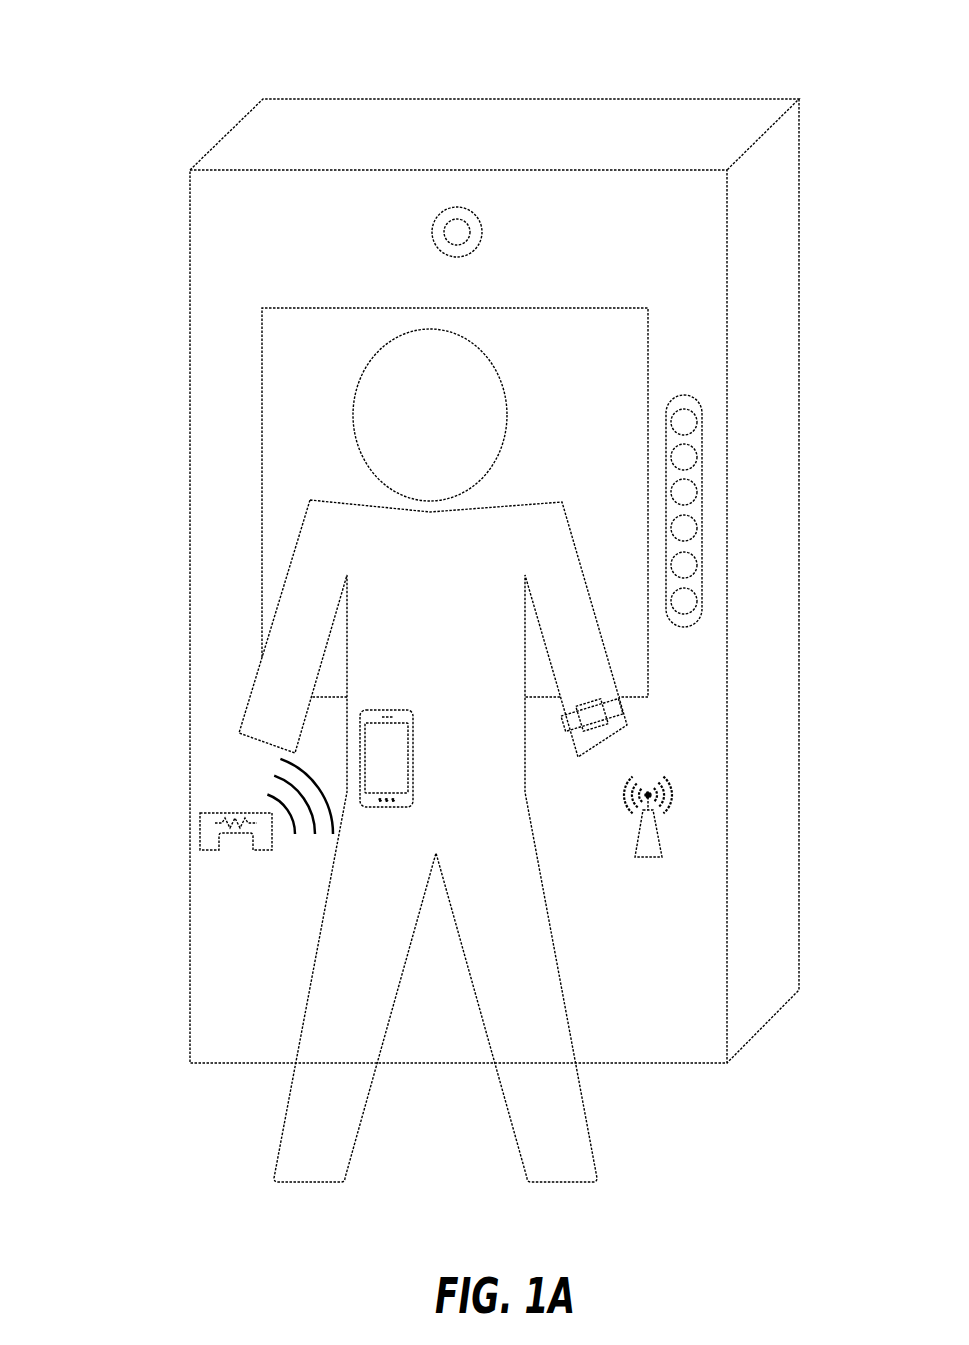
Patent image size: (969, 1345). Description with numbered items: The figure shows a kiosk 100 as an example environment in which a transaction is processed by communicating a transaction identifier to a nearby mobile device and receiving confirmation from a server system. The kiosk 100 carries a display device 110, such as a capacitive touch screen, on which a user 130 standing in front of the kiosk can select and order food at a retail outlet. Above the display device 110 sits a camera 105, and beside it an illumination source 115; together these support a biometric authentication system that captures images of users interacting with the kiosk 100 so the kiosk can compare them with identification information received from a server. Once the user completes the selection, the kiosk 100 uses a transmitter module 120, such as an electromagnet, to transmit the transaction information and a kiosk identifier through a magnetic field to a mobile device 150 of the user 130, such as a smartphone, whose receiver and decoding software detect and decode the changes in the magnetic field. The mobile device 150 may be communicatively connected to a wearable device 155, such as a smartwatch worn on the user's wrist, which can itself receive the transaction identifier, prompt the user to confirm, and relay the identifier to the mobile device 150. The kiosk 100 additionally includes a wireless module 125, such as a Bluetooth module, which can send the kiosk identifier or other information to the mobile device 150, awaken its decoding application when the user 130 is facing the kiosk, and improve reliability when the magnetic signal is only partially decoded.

The kiosk 100 is at (146, 64).
The camera 105 is at (458, 232).
The display device 110 is at (553, 343).
The illumination source 115 is at (690, 398).
The transmitter module 120 is at (222, 813).
The wireless module 125 is at (667, 785).
The user 130 is at (345, 535).
The mobile device 150 is at (383, 709).
The wearable device 155 is at (597, 697).